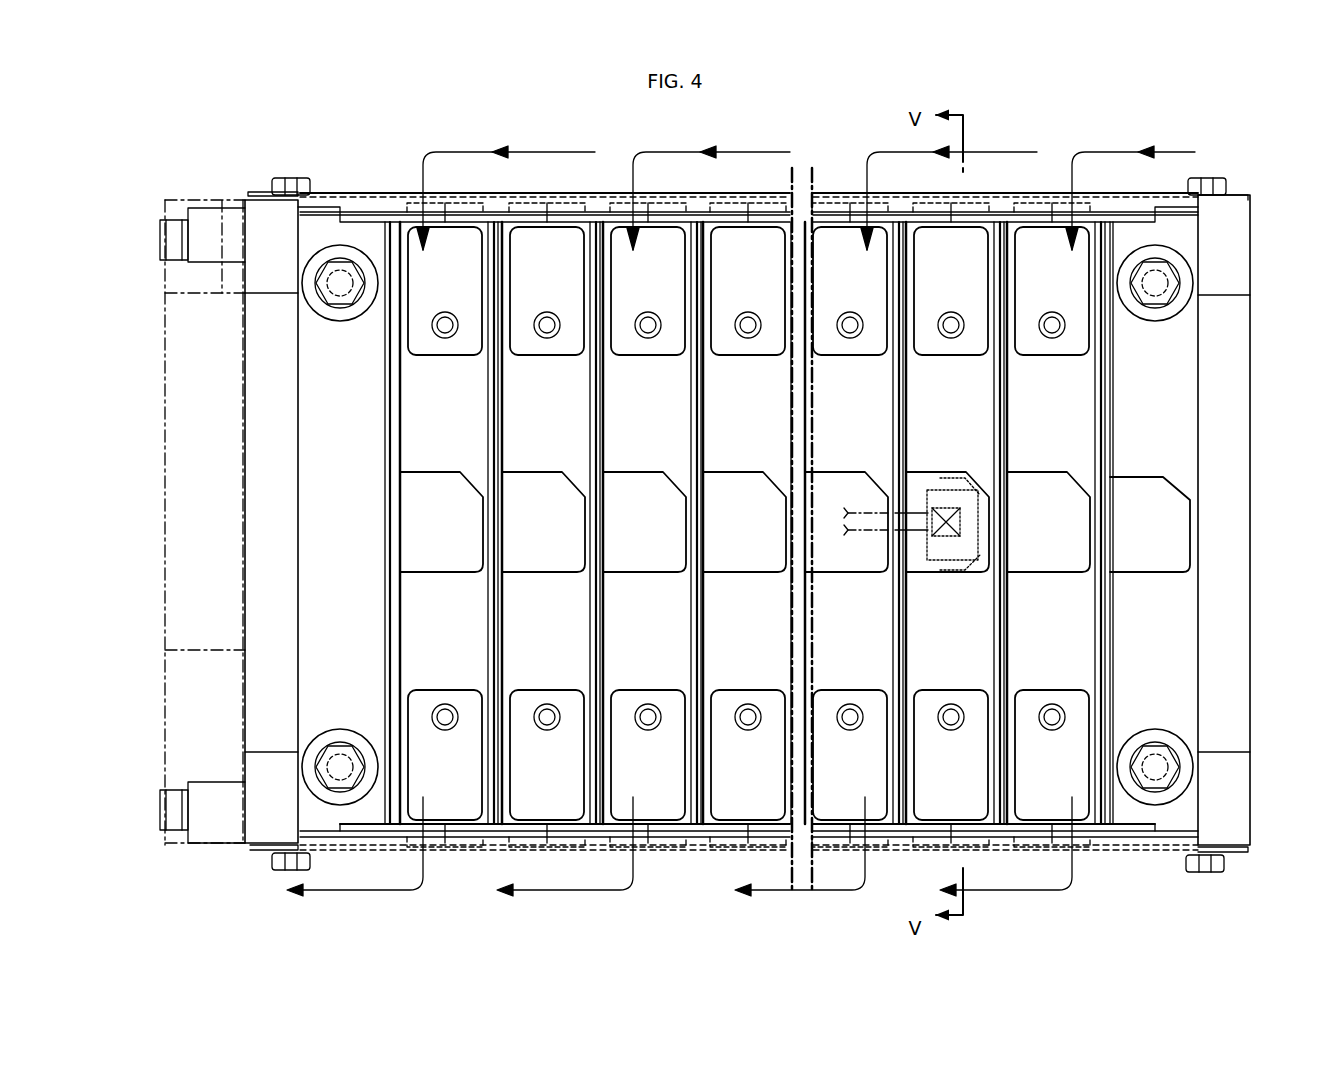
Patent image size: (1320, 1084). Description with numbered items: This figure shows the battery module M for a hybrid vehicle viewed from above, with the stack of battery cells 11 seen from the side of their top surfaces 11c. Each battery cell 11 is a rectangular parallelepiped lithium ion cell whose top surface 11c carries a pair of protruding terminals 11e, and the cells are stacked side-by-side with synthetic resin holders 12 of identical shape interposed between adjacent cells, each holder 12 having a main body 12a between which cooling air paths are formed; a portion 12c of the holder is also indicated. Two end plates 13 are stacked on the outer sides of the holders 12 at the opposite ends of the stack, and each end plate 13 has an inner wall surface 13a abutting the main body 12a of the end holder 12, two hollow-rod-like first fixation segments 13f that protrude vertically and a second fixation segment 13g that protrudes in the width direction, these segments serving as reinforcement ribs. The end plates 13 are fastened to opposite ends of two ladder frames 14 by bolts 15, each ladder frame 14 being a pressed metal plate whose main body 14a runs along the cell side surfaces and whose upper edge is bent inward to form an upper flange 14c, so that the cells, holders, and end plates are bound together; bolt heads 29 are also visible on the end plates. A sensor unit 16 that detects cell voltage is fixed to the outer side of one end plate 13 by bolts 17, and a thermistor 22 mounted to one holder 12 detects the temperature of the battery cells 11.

The battery cell 11 is at (496, 437).
The top surface 11c is at (470, 418).
The terminals 11e is at (445, 311).
The holder 12 is at (386, 558).
The main body 12a is at (392, 428).
The spacer recess 12c is at (437, 553).
The end plate 13 is at (243, 414).
The inner wall surface 13a is at (385, 377).
The first fixation segments 13f is at (348, 320).
The second fixation segment 13g is at (243, 560).
The ladder frame 14 is at (540, 182).
The main body 14a is at (622, 190).
The upper flange 14c is at (700, 192).
The bolts 15 is at (291, 178).
The sensor unit 16 is at (165, 410).
The bolts 17 is at (168, 236).
The thermistor 22 is at (978, 518).
The bolt 29 is at (340, 283).
The battery module M is at (1053, 183).